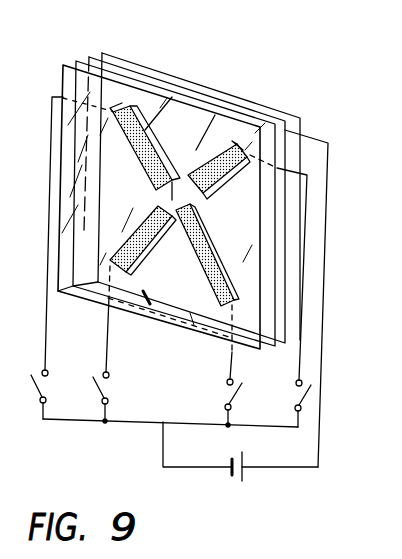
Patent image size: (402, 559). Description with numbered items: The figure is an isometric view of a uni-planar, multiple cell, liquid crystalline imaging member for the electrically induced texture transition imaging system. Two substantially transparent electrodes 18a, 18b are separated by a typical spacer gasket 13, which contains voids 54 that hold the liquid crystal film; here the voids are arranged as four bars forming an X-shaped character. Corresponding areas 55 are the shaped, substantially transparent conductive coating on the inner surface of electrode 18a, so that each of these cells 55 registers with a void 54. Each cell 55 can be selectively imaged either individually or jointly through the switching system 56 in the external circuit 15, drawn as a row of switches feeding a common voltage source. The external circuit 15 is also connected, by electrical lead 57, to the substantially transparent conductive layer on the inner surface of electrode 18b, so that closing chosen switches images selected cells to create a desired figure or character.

The substantially transparent electrode 18a is at (66, 62).
The spacer gasket 13 is at (115, 72).
The substantially transparent electrode 18b is at (167, 78).
The electrical lead 57 is at (318, 133).
The voids 54 is at (198, 133).
The shaped conductive coating areas (cells) 55 is at (156, 214).
The switching system 56 is at (98, 428).
The external circuit 15 is at (268, 474).